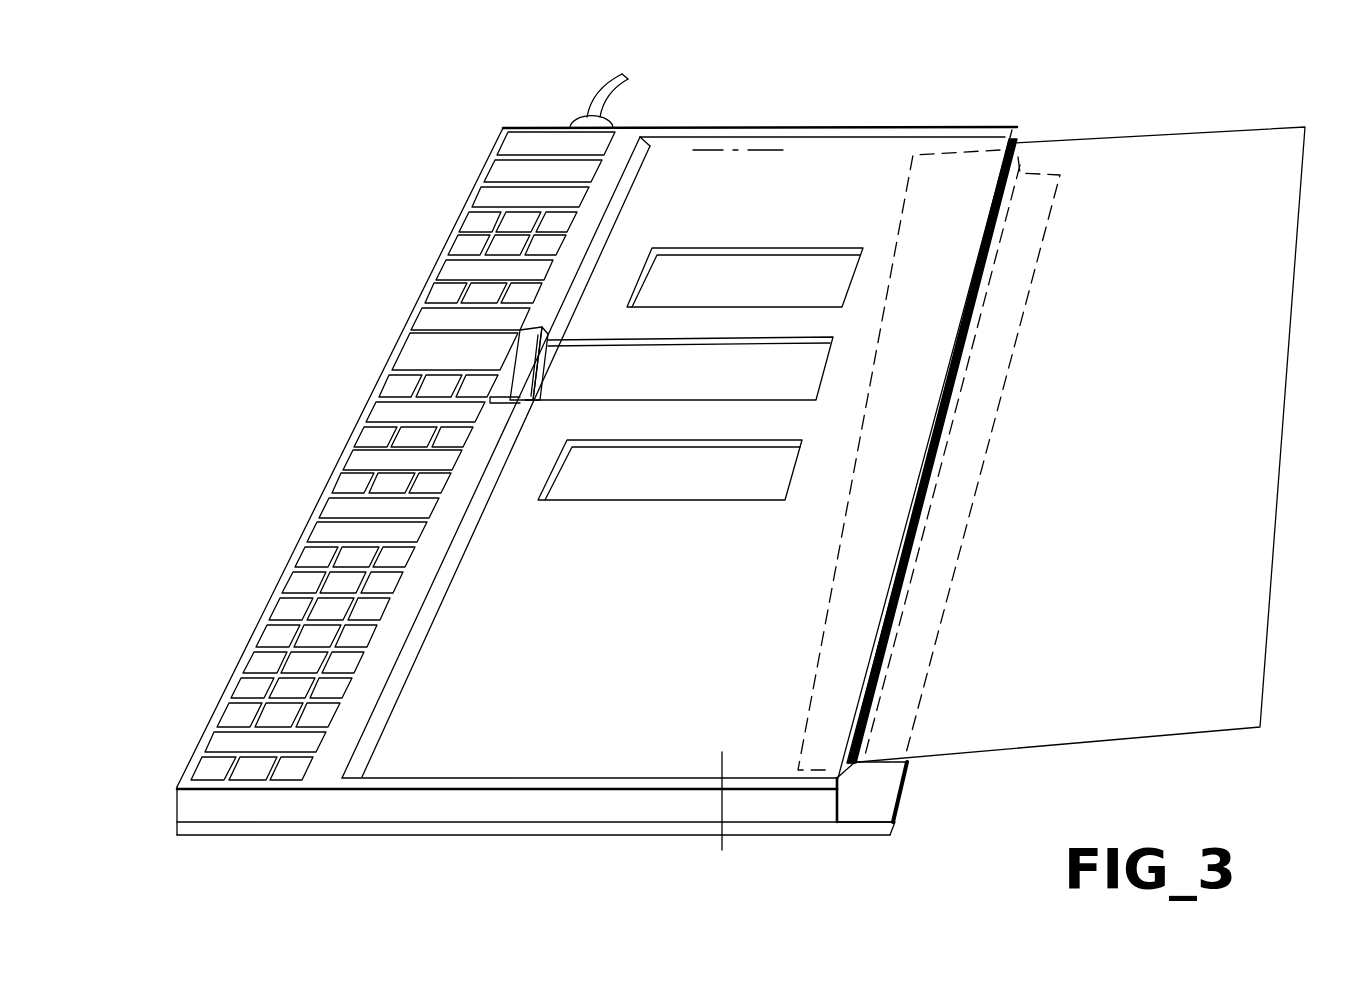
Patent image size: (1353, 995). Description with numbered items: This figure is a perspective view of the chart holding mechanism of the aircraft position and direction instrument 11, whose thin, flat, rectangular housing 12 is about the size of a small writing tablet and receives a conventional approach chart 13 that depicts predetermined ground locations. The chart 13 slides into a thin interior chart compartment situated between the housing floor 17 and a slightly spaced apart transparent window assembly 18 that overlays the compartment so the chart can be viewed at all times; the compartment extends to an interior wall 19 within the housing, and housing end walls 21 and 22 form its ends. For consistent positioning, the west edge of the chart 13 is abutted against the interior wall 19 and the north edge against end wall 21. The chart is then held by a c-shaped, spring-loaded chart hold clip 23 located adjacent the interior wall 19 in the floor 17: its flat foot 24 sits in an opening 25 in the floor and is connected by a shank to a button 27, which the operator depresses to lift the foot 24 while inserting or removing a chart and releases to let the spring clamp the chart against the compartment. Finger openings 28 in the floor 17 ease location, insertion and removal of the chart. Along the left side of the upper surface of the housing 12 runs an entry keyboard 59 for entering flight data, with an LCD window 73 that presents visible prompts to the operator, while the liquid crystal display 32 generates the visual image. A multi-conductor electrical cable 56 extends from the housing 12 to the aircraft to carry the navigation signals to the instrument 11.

The aircraft position and direction instrument 11 is at (812, 108).
The housing 12 is at (390, 328).
The approach chart 13 is at (1080, 743).
The housing floor 17 is at (875, 800).
The transparent window assembly 18 is at (566, 748).
The interior wall 19 is at (373, 729).
The housing end wall 21 is at (967, 120).
The housing end wall 22 is at (422, 810).
The chart hold clip 23 is at (552, 318).
The flat foot 24 is at (696, 381).
The opening 25 is at (584, 346).
The button 27 is at (502, 383).
The finger openings 28 is at (750, 255).
The liquid crystal display 32 is at (722, 818).
The multi-conductor electrical cable 56 is at (600, 84).
The entry keyboard 59 is at (280, 612).
The LCD window 73 is at (540, 170).